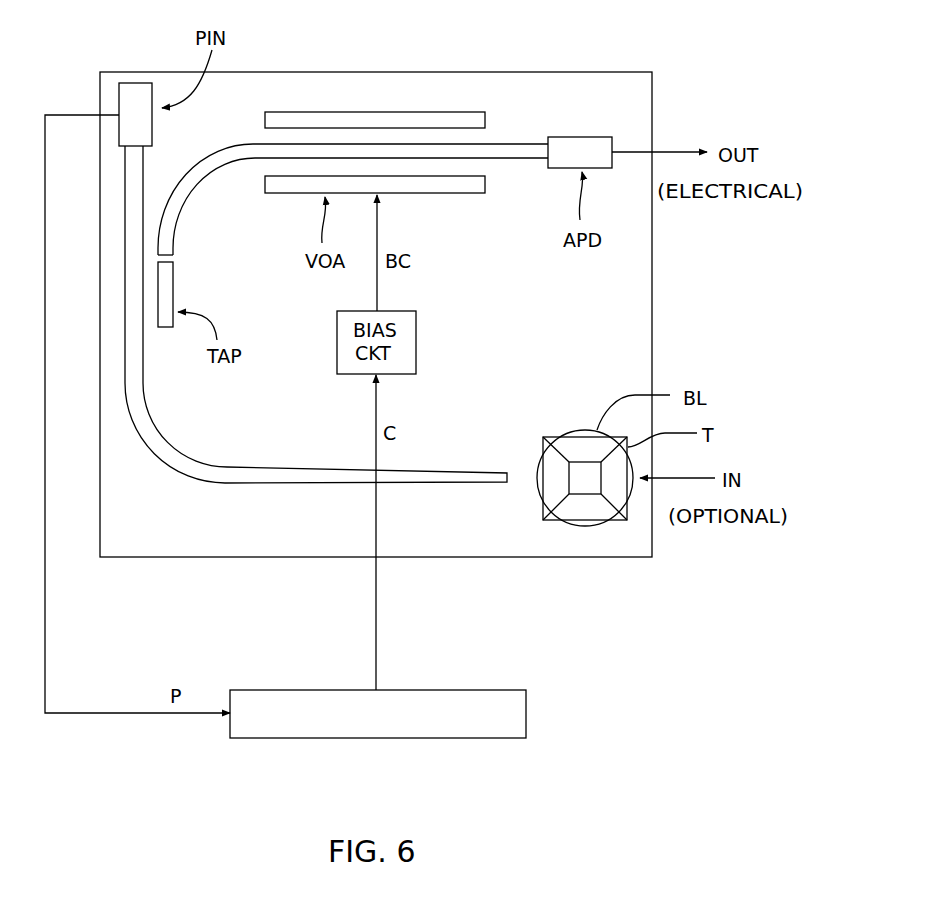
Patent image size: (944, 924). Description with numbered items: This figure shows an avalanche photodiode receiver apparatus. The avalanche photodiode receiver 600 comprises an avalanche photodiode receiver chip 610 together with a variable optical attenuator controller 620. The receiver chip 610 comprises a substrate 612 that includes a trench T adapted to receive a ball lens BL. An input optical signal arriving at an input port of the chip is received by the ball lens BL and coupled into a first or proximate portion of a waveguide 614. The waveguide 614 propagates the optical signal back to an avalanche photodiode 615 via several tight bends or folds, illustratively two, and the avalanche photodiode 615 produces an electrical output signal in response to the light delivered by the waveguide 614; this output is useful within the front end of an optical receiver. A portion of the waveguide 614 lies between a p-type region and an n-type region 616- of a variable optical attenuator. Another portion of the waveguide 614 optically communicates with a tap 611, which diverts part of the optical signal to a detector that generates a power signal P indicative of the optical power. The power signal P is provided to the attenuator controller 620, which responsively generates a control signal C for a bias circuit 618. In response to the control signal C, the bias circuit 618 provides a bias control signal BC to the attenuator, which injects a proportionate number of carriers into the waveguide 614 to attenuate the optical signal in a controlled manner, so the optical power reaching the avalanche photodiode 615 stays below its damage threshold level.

The APD receiver 600 is at (636, 720).
The APD receiver chip 610 is at (640, 73).
The tap 611 is at (175, 282).
The substrate 612 is at (618, 111).
The waveguide 614 is at (455, 470).
The avalanche photodiode (APD) 615 is at (600, 168).
The n-type region 616- is at (485, 182).
The bias circuit 618 is at (133, 83).
The VOA controller 620 is at (465, 738).